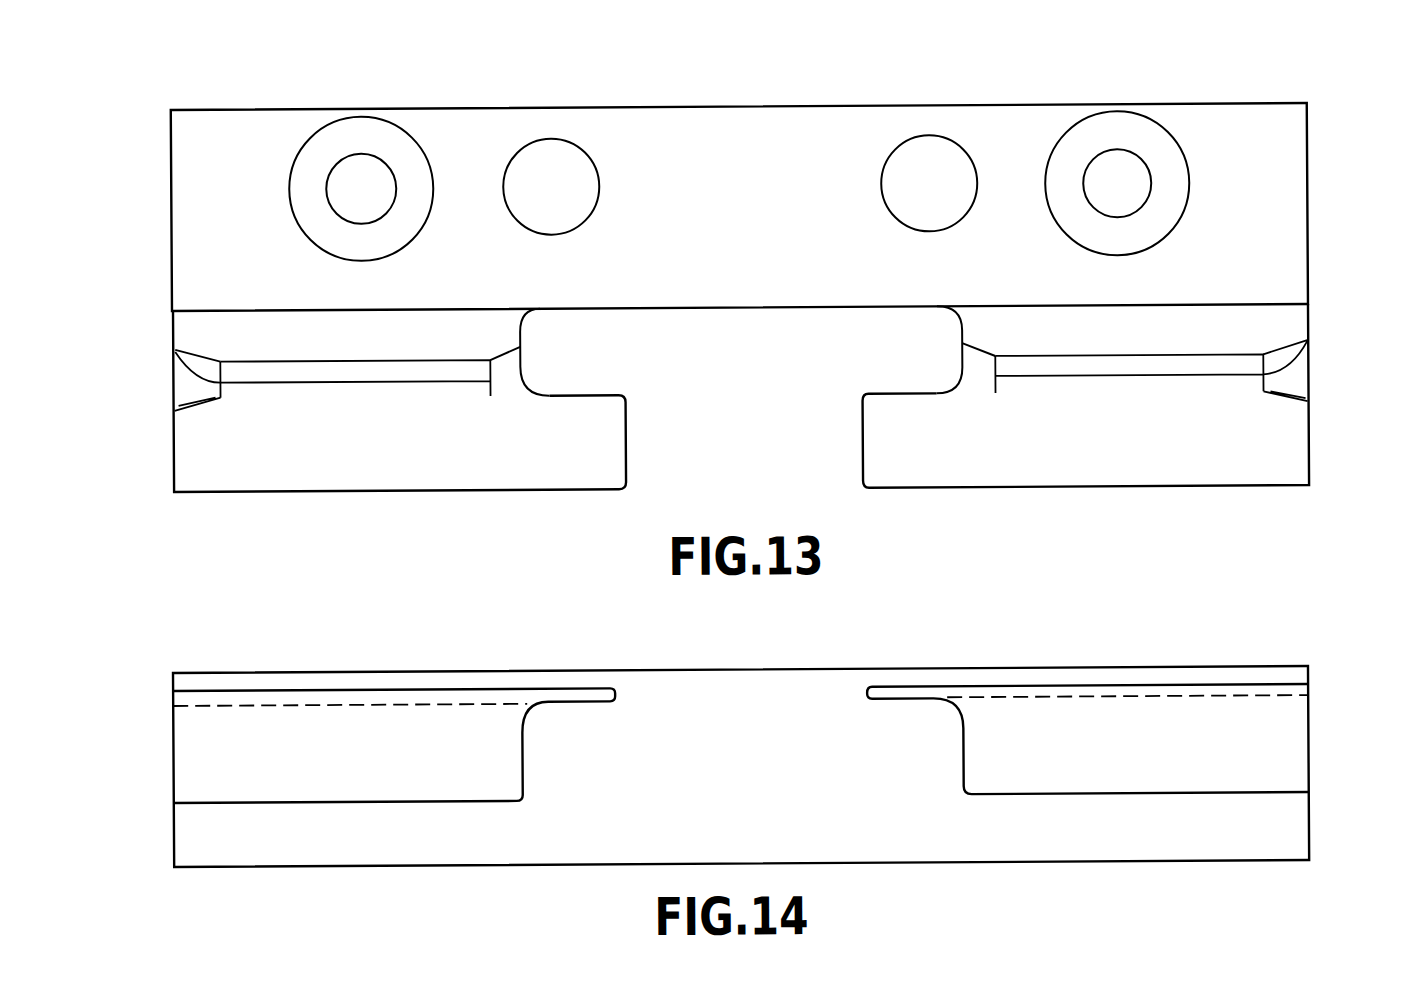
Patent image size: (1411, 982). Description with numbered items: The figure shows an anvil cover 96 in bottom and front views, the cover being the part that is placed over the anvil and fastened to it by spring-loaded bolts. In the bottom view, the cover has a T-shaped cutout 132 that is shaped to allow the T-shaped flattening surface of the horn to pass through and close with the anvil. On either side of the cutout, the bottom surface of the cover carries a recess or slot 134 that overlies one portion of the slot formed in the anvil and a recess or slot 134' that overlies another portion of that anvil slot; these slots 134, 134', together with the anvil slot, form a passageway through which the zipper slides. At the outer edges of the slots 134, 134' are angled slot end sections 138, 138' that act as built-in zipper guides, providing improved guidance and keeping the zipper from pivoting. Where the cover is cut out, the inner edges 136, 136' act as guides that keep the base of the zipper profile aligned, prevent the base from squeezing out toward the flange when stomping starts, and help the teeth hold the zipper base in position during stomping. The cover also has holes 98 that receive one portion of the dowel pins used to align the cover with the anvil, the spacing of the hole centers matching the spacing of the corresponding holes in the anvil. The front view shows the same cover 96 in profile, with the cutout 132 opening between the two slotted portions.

In FIG. 13, the anvil cover 96 is at (1310, 260).
In FIG. 14, the anvil cover 96 is at (1240, 673).
In FIG. 13, the holes 98 is at (560, 175).
In FIG. 13, the T-shaped cutout 132 is at (745, 419).
In FIG. 14, the T-shaped cutout 132 is at (788, 696).
In FIG. 13, the recess or slot 134 is at (1129, 443).
In FIG. 13, the recess or slot 134' is at (355, 447).
In FIG. 13, the inner edge 136 is at (939, 350).
In FIG. 13, the inner edge 136' is at (552, 352).
In FIG. 13, the angled slot end section 138 is at (1328, 377).
In FIG. 13, the angled slot end section 138' is at (151, 389).